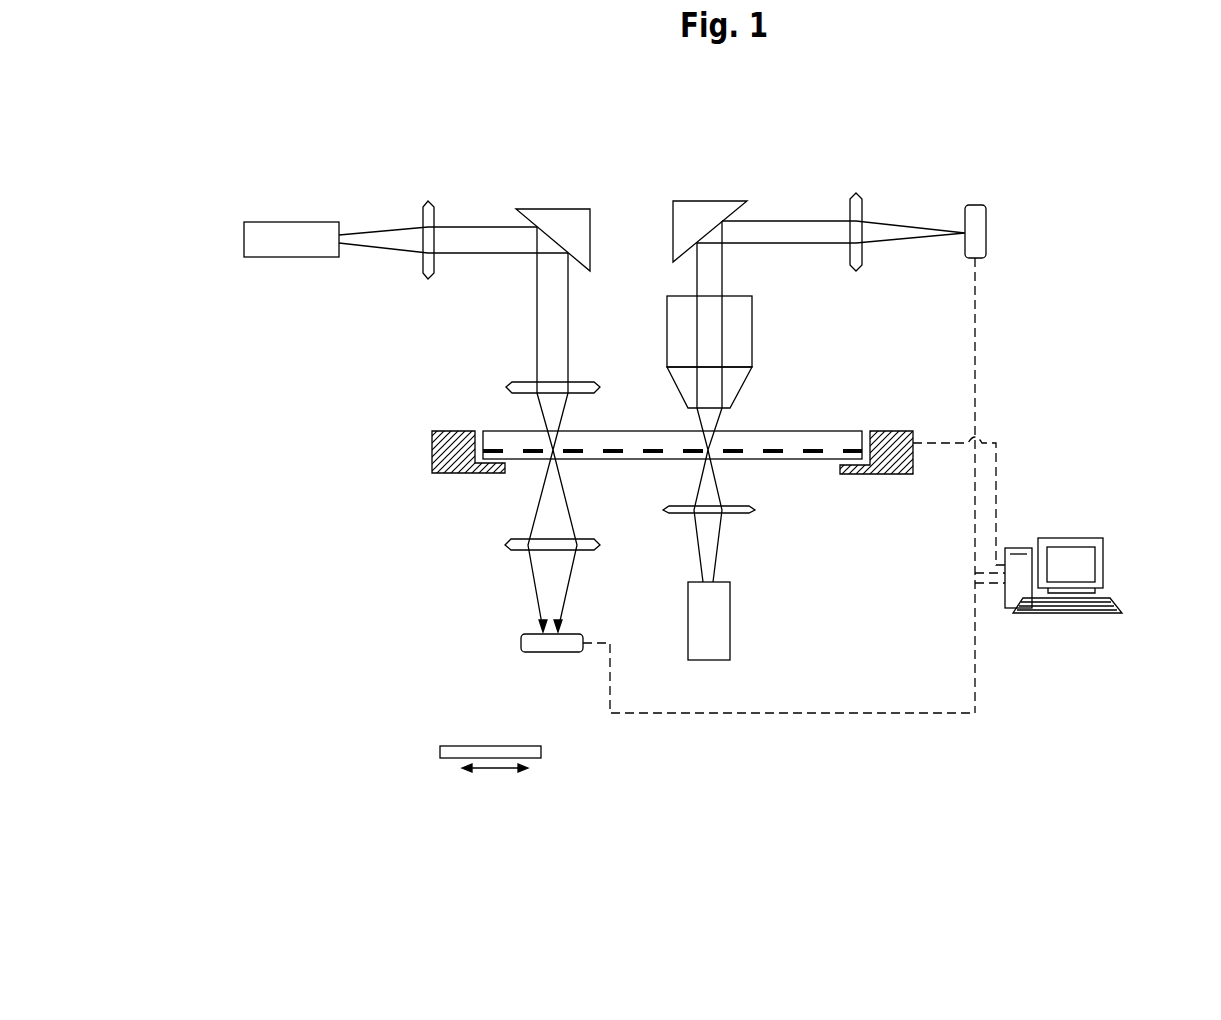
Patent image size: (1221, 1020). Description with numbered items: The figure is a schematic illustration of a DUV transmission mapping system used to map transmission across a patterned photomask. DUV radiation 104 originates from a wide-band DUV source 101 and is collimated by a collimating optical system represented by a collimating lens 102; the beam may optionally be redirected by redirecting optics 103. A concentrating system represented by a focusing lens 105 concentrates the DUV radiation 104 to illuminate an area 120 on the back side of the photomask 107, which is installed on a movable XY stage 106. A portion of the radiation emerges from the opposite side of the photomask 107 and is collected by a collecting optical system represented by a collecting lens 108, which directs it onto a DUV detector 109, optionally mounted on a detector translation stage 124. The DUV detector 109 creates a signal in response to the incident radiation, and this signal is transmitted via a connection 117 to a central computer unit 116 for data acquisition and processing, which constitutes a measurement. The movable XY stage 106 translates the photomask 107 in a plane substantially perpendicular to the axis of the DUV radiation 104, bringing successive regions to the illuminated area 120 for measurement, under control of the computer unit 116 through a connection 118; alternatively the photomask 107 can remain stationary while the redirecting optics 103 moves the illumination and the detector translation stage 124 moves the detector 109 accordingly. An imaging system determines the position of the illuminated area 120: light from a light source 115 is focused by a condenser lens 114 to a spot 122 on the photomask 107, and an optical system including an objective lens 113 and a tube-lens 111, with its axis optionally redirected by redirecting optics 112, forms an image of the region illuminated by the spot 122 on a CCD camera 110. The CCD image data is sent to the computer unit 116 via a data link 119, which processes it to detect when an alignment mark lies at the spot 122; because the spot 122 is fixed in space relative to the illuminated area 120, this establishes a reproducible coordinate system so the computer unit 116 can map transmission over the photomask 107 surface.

The wide-band DUV source 101 is at (288, 220).
The collimating lens 102 is at (423, 203).
The redirecting optics 103 is at (557, 208).
The DUV radiation 104 is at (537, 322).
The focusing lens 105 is at (506, 391).
The movable XY stage 106 is at (497, 446).
The photomask 107 is at (433, 467).
The collecting lens 108 is at (507, 545).
The DUV detector 109 is at (518, 638).
The CCD camera 110 is at (987, 208).
The tube-lens 111 is at (852, 193).
The redirecting optics 112 is at (690, 200).
The objective lens 113 is at (752, 365).
The condenser lens 114 is at (737, 512).
The light source 115 is at (730, 634).
The central computer unit 116 is at (1063, 538).
The connection 117 is at (932, 713).
The connection 118 is at (996, 487).
The data link 119 is at (975, 410).
The illuminated area 120 is at (480, 480).
The spot 122 is at (670, 490).
The detector translation stage 124 is at (460, 758).